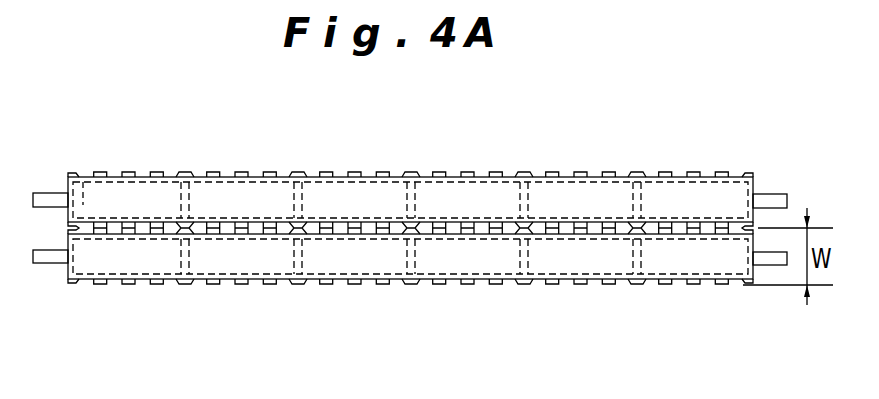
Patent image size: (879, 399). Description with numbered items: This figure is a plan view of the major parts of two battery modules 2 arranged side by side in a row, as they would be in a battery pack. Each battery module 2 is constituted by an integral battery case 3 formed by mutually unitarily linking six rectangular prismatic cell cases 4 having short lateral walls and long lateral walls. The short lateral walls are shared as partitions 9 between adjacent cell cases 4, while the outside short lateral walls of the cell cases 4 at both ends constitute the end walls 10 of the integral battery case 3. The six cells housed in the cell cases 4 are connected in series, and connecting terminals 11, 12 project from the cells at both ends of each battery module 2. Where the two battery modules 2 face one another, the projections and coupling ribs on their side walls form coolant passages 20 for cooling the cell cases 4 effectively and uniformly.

The battery module 2 is at (365, 174).
The integral battery case 3 is at (199, 177).
The cell case 4 is at (137, 214).
The partition 9 is at (185, 207).
The end wall 10 is at (74, 213).
The connecting terminal 11 is at (42, 257).
The connecting terminal 12 is at (46, 200).
The coolant passage 20 is at (453, 229).